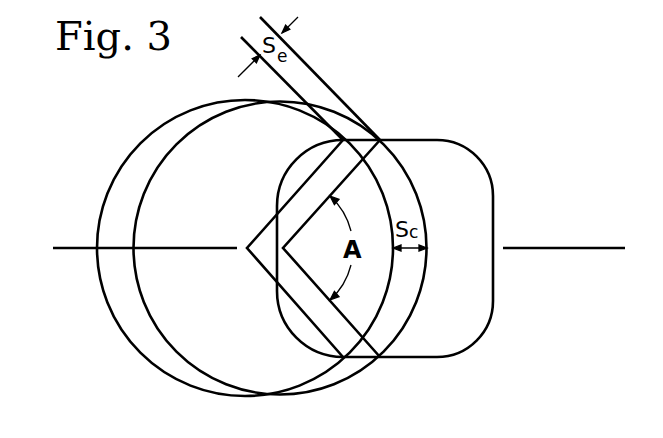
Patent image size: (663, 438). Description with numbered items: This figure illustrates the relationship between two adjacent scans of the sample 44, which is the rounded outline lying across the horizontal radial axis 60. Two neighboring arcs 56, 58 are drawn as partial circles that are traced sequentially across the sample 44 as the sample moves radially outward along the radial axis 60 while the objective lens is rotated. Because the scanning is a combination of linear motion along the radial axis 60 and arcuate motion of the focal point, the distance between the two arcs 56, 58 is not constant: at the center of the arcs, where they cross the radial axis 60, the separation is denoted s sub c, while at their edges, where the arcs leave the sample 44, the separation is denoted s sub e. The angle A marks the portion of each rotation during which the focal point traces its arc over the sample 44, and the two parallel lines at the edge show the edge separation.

The sample 44 is at (421, 345).
The arc 56 is at (408, 168).
The arc 58 is at (373, 170).
The radial axis 60 is at (535, 247).